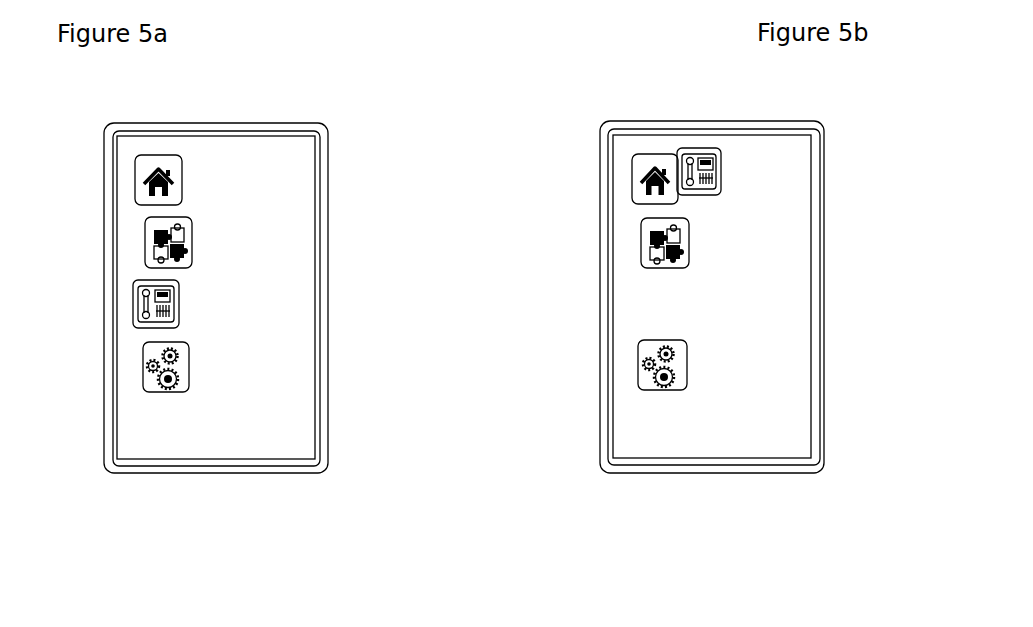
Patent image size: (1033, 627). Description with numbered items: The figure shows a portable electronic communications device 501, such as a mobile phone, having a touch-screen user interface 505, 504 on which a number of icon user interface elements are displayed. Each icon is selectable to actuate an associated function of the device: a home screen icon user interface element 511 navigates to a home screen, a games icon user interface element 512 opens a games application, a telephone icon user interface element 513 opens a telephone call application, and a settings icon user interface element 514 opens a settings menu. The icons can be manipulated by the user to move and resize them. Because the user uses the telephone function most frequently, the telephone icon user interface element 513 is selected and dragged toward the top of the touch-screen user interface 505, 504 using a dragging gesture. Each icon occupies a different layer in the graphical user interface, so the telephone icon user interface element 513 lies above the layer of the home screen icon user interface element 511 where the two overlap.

In FIG. 5A, the portable electronic communications device 501 is at (221, 353).
In FIG. 5A, the touch-screen user interface 504 is at (288, 168).
In FIG. 5A, the touch-screen user interface 505 is at (271, 297).
In FIG. 5A, the home screen icon user interface element 511 is at (150, 181).
In FIG. 5B, the home screen icon user interface element 511 is at (645, 187).
In FIG. 5A, the games application icon user interface element 512 is at (155, 251).
In FIG. 5B, the games application icon user interface element 512 is at (652, 243).
In FIG. 5A, the telephone call application icon user interface element 513 is at (142, 305).
In FIG. 5B, the telephone call application icon user interface element 513 is at (712, 160).
In FIG. 5A, the settings menu icon user interface element 514 is at (147, 378).
In FIG. 5B, the settings menu icon user interface element 514 is at (662, 377).